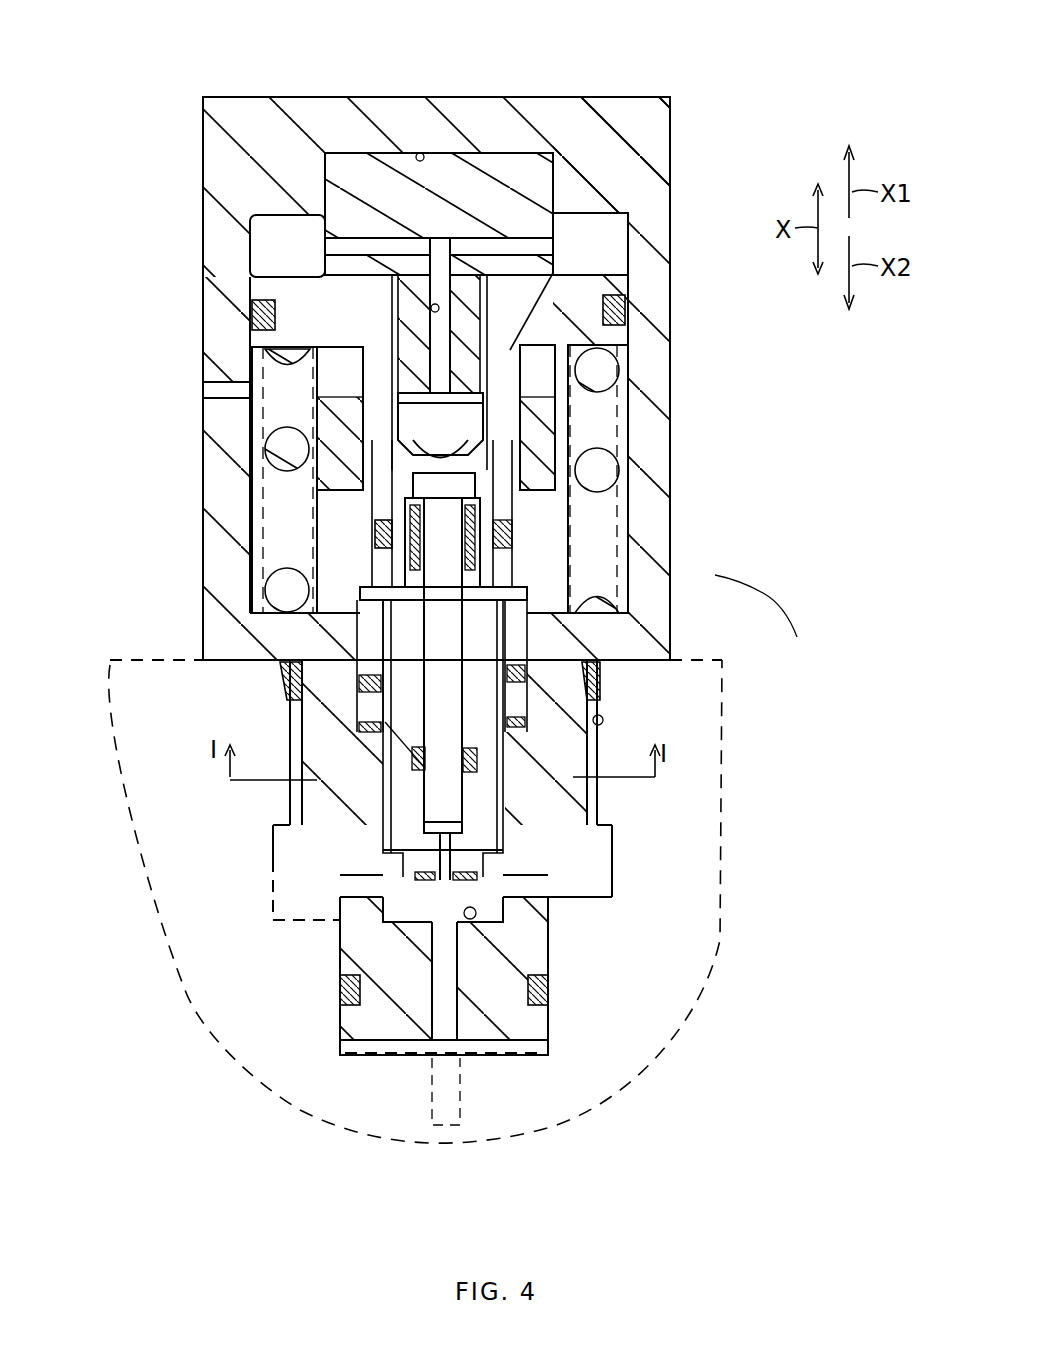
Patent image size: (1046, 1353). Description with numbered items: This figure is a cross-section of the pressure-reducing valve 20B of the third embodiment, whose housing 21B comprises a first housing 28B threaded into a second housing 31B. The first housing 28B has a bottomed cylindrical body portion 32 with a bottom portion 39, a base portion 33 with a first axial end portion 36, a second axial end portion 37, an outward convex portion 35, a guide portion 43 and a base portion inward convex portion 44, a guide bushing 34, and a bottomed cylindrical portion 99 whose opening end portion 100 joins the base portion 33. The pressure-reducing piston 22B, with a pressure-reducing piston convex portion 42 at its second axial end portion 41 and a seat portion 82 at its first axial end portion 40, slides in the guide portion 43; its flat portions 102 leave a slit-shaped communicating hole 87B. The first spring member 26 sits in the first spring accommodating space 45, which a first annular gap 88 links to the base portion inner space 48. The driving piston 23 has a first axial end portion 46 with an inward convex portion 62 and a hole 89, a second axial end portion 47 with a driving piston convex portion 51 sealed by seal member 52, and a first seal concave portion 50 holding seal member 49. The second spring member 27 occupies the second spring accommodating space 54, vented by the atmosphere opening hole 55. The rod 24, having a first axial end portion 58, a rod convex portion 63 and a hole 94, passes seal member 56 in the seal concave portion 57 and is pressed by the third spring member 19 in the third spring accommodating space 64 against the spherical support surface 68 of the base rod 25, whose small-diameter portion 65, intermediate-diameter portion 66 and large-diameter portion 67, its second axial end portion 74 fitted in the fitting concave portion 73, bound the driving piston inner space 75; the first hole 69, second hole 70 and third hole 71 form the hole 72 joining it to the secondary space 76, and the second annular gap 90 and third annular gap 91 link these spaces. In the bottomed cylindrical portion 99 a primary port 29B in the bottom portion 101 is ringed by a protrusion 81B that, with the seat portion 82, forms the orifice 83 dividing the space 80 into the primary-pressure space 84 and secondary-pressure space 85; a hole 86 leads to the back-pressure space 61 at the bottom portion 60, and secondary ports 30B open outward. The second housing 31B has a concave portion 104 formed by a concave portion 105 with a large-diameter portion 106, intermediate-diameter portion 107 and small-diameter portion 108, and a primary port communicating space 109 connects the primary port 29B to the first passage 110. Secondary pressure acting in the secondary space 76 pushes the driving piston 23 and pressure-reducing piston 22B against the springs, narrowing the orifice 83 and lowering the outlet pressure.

The pressure-reducing valve 20B is at (640, 44).
The body portion 32 is at (670, 535).
The bottom portion 39 is at (272, 210).
The outward convex portion 35 is at (223, 647).
The second spring accommodating space 54 is at (250, 515).
The atmosphere opening hole 55 is at (250, 390).
The driving piston convex portion 51 is at (250, 288).
The annular seal member 52 is at (252, 316).
The first seal concave portion 50 is at (625, 310).
The driving piston 23 is at (628, 335).
The second axial end portion of the driving piston 47 is at (618, 285).
The secondary space 76 is at (287, 246).
The second hole 70 is at (553, 250).
The second axial end portion of the large-diameter portion 74 is at (487, 160).
The fitting concave portion 73 is at (420, 152).
The base rod 25 is at (548, 170).
The large-diameter portion 67 is at (555, 192).
The hole 72 is at (458, 243).
The third hole 71 is at (430, 308).
The intermediate-diameter portion 66 is at (487, 332).
The driving piston inner space 75 is at (518, 348).
The first hole 69 is at (388, 362).
The small-diameter portion 65 is at (488, 412).
The support surface 68 is at (440, 425).
The third annular gap 91 is at (480, 458).
The second axial end portion of the base portion 37 is at (340, 405).
The guide bushing 34 is at (532, 405).
The base portion inward convex portion 44 is at (352, 512).
The second spring member 27 is at (612, 375).
The rod convex portion 63 is at (398, 490).
The third spring member 19 is at (482, 522).
The annular seal member 49 is at (372, 530).
The base portion inner space 48 is at (375, 556).
The pressure-reducing piston convex portion 42 is at (362, 600).
The first axial end portion of the driving piston 46 is at (505, 578).
The second axial end portion of the pressure-reducing piston 41 is at (520, 600).
The second annular gap 90 is at (456, 572).
The third spring accommodating space 64 is at (420, 534).
The inward convex portion 62 is at (444, 676).
The first annular gap 88 is at (360, 632).
The hole 89 is at (496, 666).
The rod 24 is at (458, 665).
The hole 94 is at (497, 735).
The flat portions 102 is at (410, 740).
The first axial end portion of the rod 58 is at (437, 825).
The bottom portion of the pressure-reducing piston 60 is at (458, 818).
The hole 86 is at (452, 845).
The annular seal member 56 is at (485, 768).
The seal concave portion 57 is at (505, 755).
The base portion 33 is at (318, 733).
The first axial end portion of the base portion 36 is at (598, 832).
The guide portion 43 is at (360, 807).
The pressure-reducing piston 22B is at (388, 663).
The first spring accommodating space 45 is at (357, 710).
The communicating hole 87B is at (382, 762).
The first spring member 26 is at (585, 648).
The first housing 28B is at (650, 605).
The tensioner body 21B is at (766, 606).
The second housing 31B is at (705, 660).
The secondary ports 30B is at (345, 900).
The seat portion 82 is at (390, 878).
The first axial end portion of the pressure-reducing piston 40 is at (490, 876).
The back-pressure space 61 is at (435, 846).
The secondary-pressure space 85 is at (460, 880).
The opening end portion 100 is at (571, 890).
The bottom portion 101 is at (549, 955).
The space 80 is at (383, 922).
The orifice 83 is at (465, 906).
The primary-pressure space 84 is at (432, 948).
The annular protrusion 81B is at (462, 930).
The bottomed cylindrical portion 99 is at (549, 1016).
The concave portion 104 is at (338, 992).
The concave portion 105 is at (340, 1032).
The primary port 29B is at (408, 1056).
The primary port communicating space 109 is at (548, 1058).
The small-diameter portion 108 is at (355, 1058).
The first passage 110 is at (445, 1128).
The intermediate-diameter portion 107 is at (604, 720).
The large-diameter portion 106 is at (612, 908).